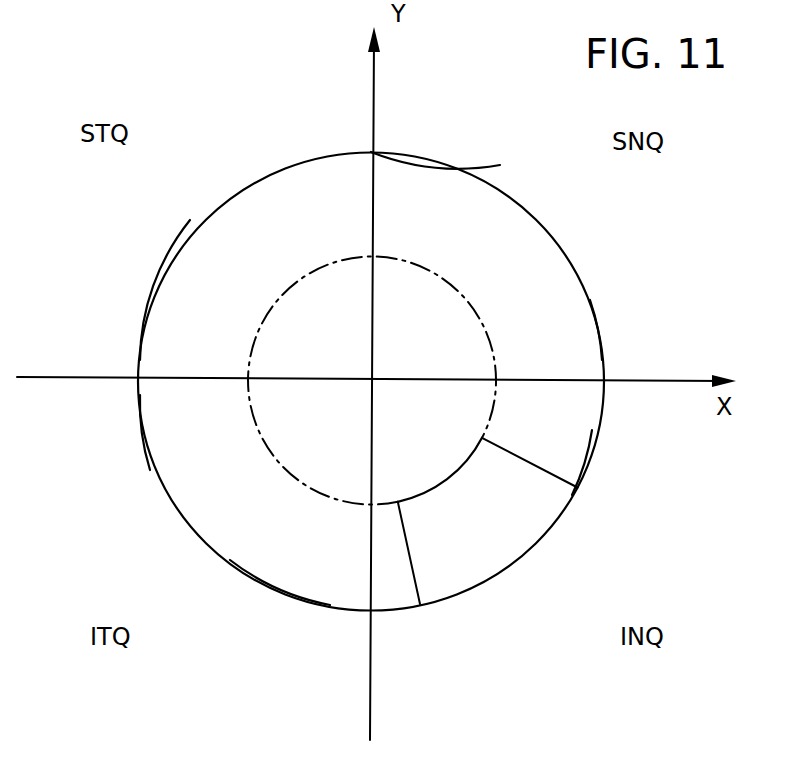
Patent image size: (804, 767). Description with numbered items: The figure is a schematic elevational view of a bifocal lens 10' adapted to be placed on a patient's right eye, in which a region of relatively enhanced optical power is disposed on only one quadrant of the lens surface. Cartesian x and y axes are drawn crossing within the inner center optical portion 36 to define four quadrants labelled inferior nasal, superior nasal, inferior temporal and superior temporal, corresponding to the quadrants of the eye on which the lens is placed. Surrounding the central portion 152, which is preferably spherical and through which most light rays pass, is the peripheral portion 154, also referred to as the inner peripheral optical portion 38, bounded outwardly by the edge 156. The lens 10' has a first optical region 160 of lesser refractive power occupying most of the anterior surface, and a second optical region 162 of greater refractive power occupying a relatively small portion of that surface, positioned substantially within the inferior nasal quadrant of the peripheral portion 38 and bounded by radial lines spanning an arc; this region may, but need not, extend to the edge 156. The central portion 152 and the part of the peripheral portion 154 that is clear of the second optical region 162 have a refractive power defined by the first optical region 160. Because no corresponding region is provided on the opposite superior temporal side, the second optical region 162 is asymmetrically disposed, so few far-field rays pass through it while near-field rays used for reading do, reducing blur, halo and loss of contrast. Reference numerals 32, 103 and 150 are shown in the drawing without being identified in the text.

The lens 10' is at (371, 365).
The peripheral region 32 is at (280, 573).
The inner center optical portion 36 is at (452, 313).
The inner peripheral optical portion 38 is at (572, 450).
The outer edge 103 is at (582, 338).
The outer boundary 150 is at (176, 295).
The central portion 152 is at (340, 352).
The peripheral portion 154 is at (233, 474).
The edge 156 is at (146, 437).
The first optical region 160 is at (436, 180).
The second optical region 162 is at (444, 574).